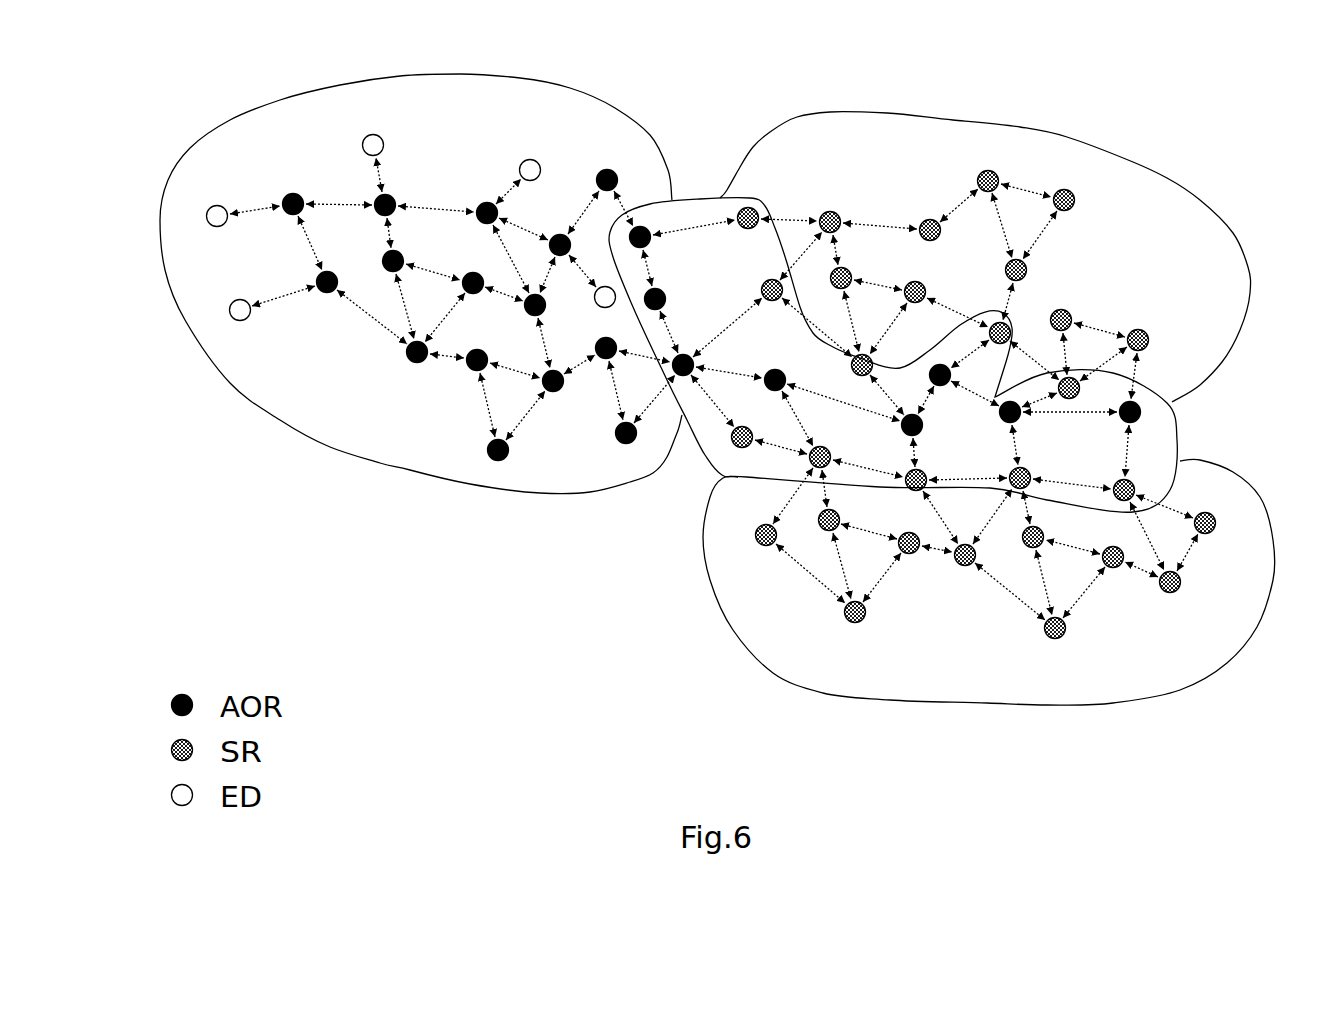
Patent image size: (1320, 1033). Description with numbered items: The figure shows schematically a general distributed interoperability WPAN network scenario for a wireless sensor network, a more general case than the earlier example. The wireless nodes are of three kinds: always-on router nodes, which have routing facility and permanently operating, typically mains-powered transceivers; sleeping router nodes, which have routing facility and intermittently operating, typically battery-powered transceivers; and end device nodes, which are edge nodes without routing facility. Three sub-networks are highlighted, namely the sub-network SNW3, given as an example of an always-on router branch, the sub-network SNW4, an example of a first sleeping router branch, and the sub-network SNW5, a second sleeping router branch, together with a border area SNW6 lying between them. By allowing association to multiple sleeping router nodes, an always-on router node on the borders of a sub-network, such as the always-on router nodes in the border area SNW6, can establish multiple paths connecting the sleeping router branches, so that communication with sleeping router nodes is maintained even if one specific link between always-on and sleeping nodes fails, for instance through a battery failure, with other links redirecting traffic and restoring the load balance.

The sub-network SNW3 is at (418, 427).
The sub-network SNW4 is at (1127, 248).
The sub-network SNW5 is at (777, 602).
The border area SNW6 is at (708, 283).